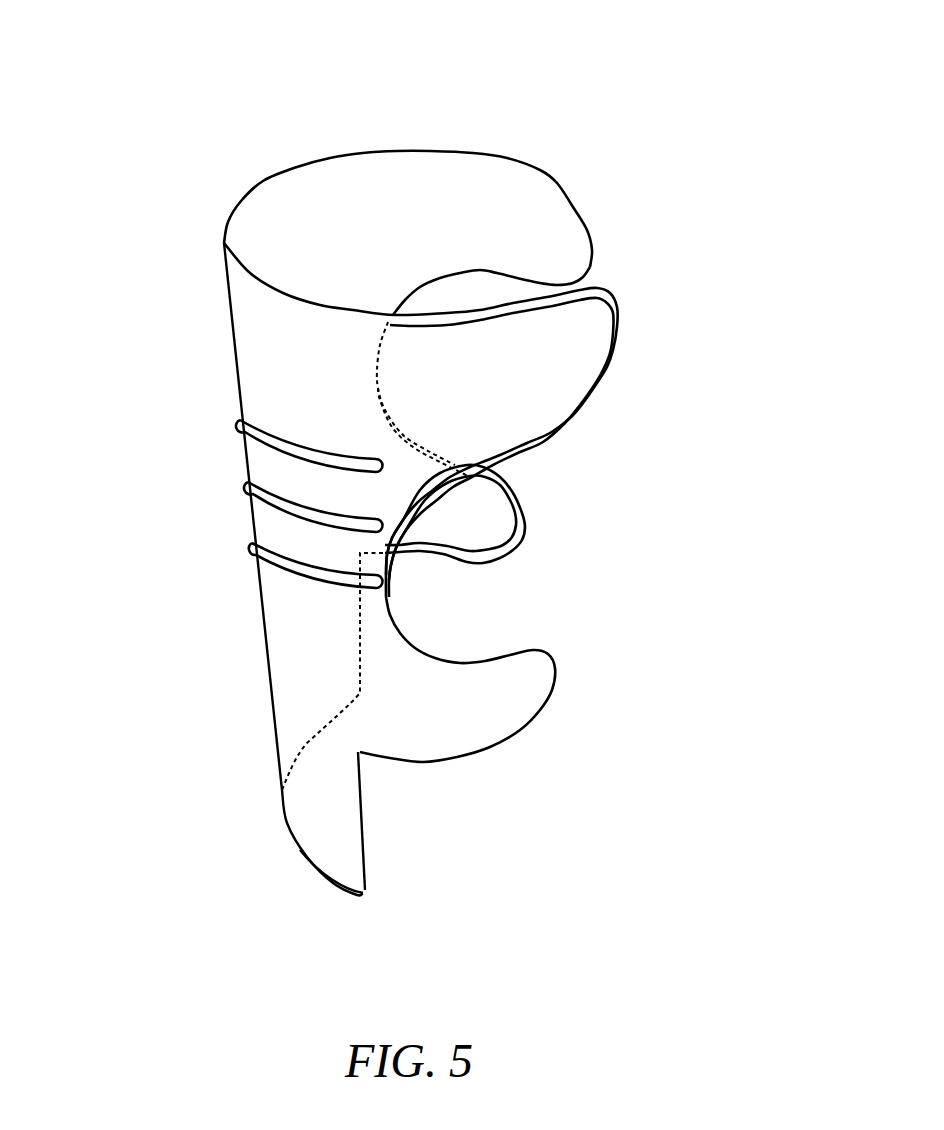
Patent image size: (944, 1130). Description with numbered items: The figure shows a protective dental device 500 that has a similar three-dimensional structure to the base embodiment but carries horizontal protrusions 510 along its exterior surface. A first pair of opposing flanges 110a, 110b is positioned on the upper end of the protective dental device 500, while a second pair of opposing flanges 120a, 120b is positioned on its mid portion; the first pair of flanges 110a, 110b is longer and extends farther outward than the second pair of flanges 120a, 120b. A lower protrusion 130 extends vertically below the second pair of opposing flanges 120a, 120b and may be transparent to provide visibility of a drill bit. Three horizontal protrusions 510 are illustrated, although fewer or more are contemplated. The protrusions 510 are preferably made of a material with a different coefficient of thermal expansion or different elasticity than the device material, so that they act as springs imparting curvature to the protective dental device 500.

The protective dental device 500 is at (430, 88).
The first opposing flange 110a is at (552, 238).
The first opposing flange 110b is at (597, 323).
The second opposing flange 120a is at (493, 537).
The second opposing flange 120b is at (527, 697).
The lower protrusion 130 is at (348, 862).
The horizontal protrusions 510 is at (275, 442).